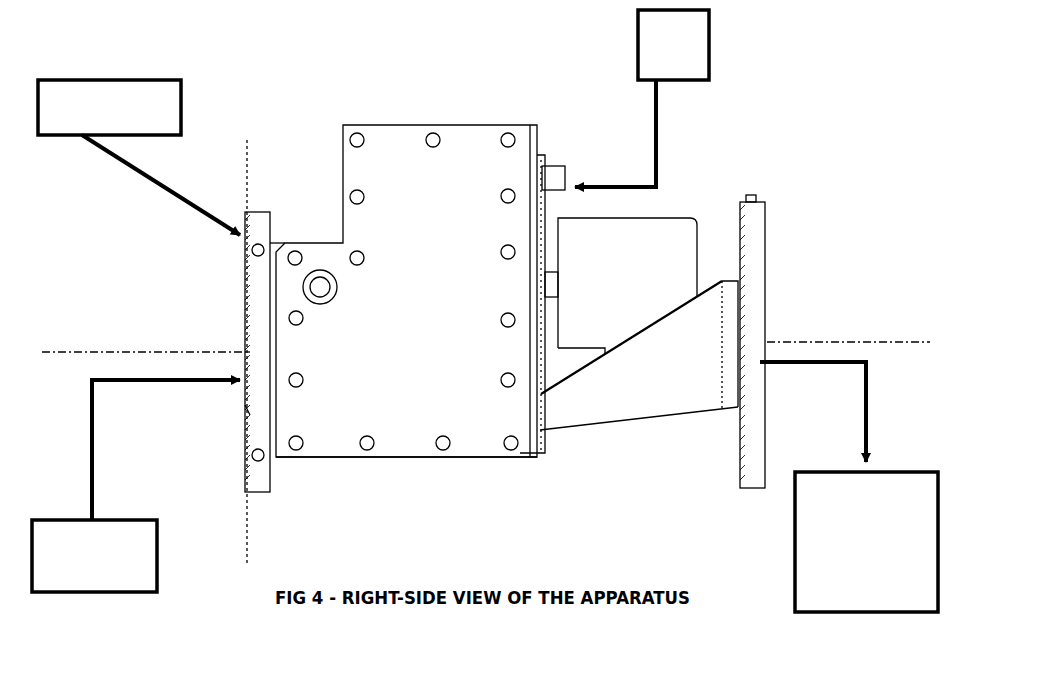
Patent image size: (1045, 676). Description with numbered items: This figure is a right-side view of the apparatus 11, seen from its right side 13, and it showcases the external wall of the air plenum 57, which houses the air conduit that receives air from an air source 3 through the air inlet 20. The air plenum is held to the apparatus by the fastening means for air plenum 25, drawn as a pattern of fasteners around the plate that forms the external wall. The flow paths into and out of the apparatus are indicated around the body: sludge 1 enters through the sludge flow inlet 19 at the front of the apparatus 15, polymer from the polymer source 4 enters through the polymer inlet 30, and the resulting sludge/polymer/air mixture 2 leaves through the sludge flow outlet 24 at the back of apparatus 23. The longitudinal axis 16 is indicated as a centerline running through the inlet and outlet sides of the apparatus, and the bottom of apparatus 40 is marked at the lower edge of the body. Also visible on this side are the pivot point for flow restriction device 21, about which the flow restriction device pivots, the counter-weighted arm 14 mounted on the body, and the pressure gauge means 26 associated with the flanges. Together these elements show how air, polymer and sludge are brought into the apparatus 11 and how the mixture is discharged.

The sludge 1 is at (82, 520).
The sludge/polymer/air mixture 2 is at (815, 612).
The air source 3 is at (638, 62).
The polymer source 4 is at (145, 80).
The apparatus 11 is at (538, 128).
The right side of the apparatus 13 is at (392, 145).
The counter-weighted arm 14 is at (670, 230).
The front of the apparatus 15 is at (244, 410).
The longitudinal axis 16 is at (123, 352).
The sludge flow inlet 19 is at (246, 352).
The air inlet 20 is at (566, 175).
The pivot point for flow restriction device 21 is at (318, 280).
The back of apparatus 23 is at (768, 250).
The sludge flow outlet 24 is at (770, 345).
The fastening means for air plenum 25 is at (437, 125).
The pressure gauge means 26 is at (252, 212).
The polymer inlet 30 is at (254, 250).
The bottom of apparatus 40 is at (480, 460).
The external wall of air plenum 57 is at (466, 140).